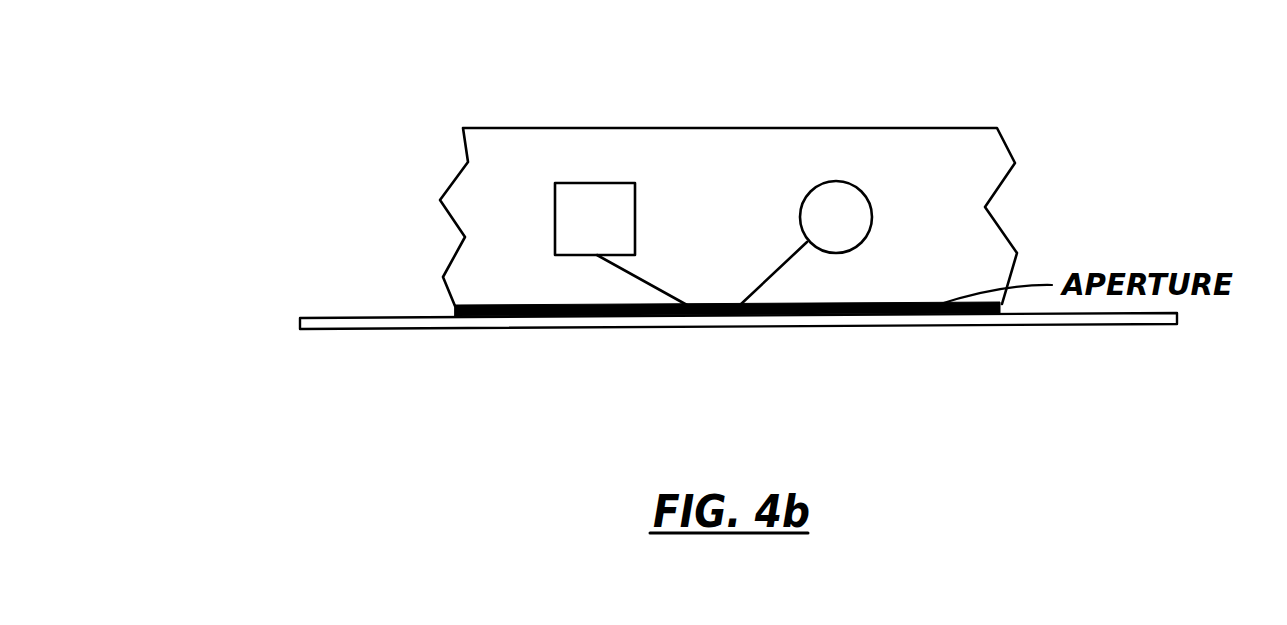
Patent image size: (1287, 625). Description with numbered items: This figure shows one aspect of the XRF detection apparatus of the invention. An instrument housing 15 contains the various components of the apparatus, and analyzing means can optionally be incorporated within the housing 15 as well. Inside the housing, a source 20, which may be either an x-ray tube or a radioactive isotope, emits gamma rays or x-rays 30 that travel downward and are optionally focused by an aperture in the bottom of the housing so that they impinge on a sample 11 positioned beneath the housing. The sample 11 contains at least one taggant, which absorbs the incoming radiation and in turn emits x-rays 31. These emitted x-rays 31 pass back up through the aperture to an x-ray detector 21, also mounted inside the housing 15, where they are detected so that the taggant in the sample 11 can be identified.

The instrument housing 15 is at (700, 135).
The x-ray detector 21 is at (582, 213).
The source 20 is at (843, 217).
The x-rays 31 is at (628, 273).
The gamma rays or x-rays 30 is at (780, 268).
The sample 11 is at (375, 322).